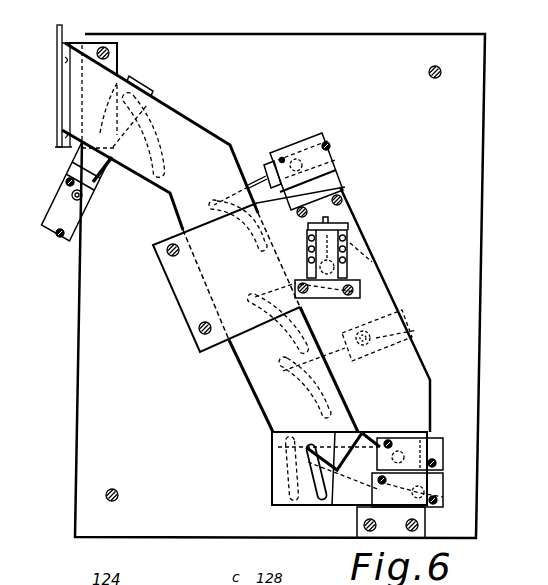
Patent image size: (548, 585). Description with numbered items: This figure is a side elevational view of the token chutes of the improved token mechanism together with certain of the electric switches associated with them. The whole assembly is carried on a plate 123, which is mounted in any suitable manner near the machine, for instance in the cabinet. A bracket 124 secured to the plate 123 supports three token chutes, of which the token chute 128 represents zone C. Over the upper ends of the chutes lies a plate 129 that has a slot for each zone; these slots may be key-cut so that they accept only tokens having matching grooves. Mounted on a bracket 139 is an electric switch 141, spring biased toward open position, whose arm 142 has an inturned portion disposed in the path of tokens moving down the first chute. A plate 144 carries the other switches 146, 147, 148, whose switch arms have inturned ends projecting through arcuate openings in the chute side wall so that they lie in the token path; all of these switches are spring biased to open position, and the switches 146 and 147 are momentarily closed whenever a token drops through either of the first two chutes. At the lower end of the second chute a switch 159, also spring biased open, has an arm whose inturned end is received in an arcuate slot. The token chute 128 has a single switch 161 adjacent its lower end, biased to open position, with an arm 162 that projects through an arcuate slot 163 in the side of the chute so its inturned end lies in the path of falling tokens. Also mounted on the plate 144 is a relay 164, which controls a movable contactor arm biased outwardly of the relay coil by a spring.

The plate 123 is at (90, 420).
The bracket 124 is at (186, 298).
The token chute 128 is at (273, 410).
The plate 129 is at (57, 34).
The bracket 139 is at (103, 182).
The electric switch 141 is at (50, 222).
The arm 142 is at (78, 164).
The plate 144 is at (383, 302).
The switch 146 is at (347, 153).
The switch 147 is at (372, 271).
The switch 148 is at (410, 344).
The switch 159 is at (445, 483).
The switch 161 is at (443, 443).
The arm 162 is at (349, 458).
The arcuate slot 163 is at (317, 492).
The relay 164 is at (345, 219).